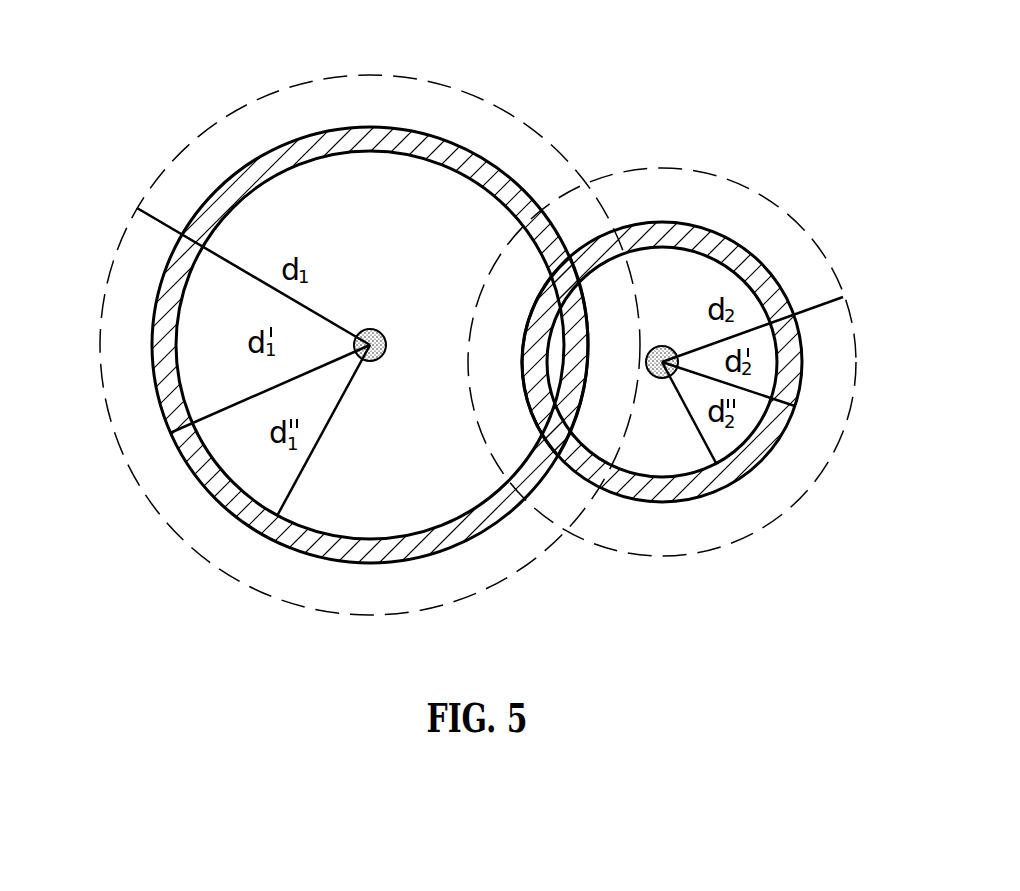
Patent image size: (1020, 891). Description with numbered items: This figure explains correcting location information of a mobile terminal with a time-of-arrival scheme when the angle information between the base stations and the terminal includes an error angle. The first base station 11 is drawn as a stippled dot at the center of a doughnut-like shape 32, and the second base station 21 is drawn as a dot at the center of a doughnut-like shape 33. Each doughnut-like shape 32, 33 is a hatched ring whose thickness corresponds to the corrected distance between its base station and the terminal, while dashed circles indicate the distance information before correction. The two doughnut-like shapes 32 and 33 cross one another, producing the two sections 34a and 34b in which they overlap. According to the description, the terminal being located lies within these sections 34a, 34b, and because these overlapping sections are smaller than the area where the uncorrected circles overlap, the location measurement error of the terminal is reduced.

The first base station 11 is at (383, 360).
The second base station 21 is at (660, 378).
The doughnut-like shape 32 is at (398, 142).
The doughnut-like shape 33 is at (690, 232).
The section 34a is at (563, 290).
The section 34b is at (567, 525).